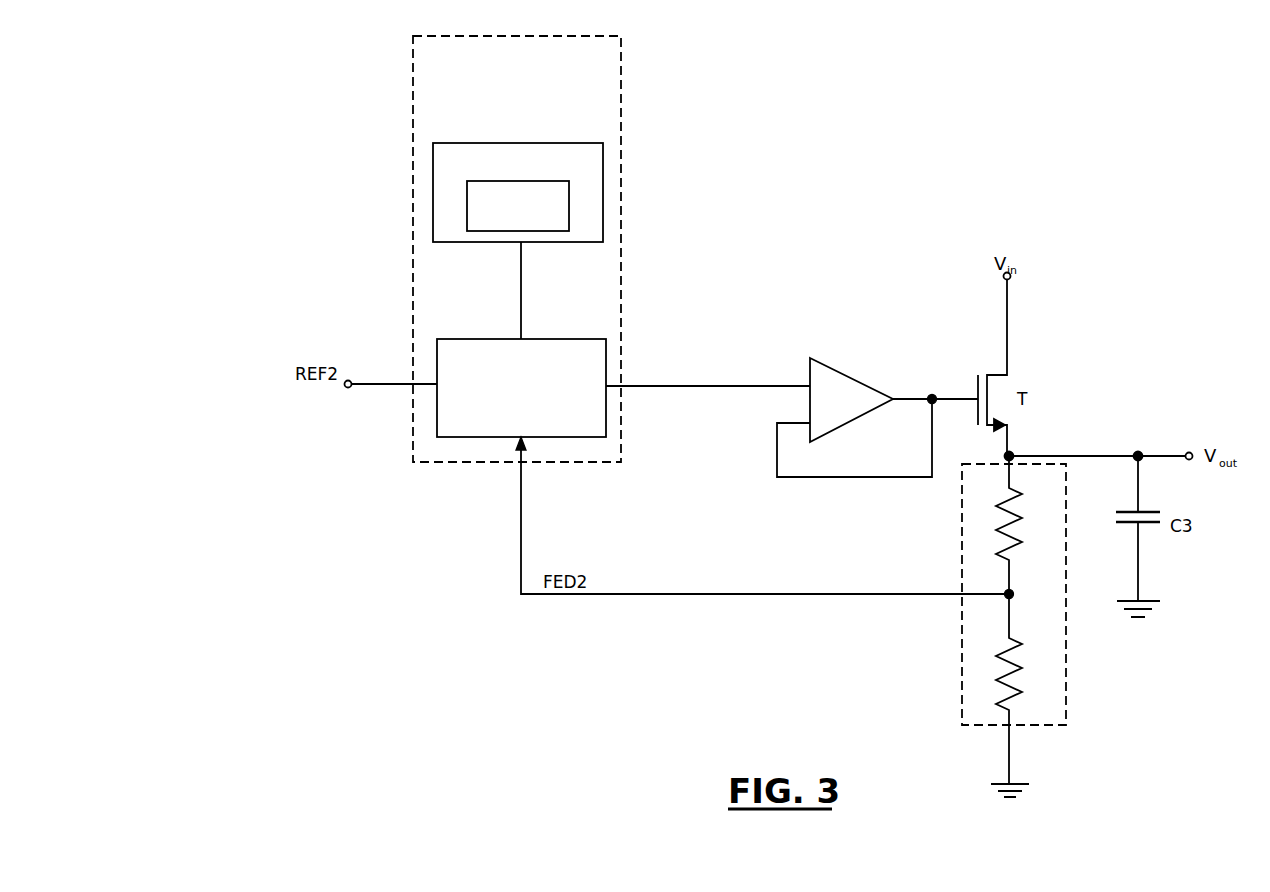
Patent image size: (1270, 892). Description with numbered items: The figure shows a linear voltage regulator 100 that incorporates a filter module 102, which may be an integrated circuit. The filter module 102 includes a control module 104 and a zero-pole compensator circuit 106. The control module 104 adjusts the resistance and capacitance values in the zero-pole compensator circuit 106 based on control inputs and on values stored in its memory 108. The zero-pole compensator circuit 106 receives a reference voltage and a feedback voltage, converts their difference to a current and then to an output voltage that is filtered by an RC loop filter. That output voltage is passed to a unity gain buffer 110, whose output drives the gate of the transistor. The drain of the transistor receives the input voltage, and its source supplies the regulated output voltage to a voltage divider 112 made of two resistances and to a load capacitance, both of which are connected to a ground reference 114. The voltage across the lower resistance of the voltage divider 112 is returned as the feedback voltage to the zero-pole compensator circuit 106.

The linear voltage regulator 100 is at (277, 171).
The filter module 102 is at (622, 219).
The control module 104 is at (487, 143).
The zero-pole compensator circuit 106 is at (480, 339).
The memory 108 is at (540, 231).
The unity gain buffer 110 is at (864, 385).
The voltage divider 112 is at (1067, 620).
The ground reference 114 is at (1150, 600).